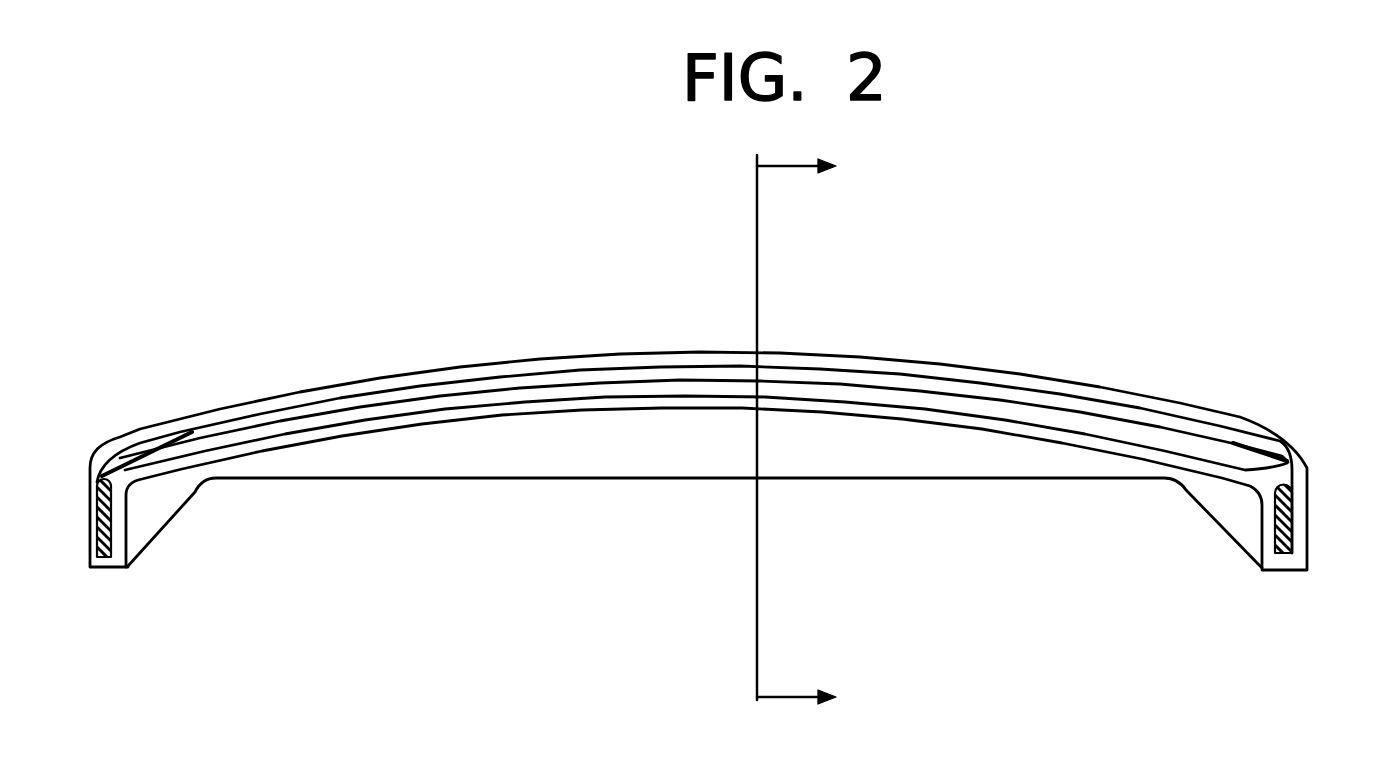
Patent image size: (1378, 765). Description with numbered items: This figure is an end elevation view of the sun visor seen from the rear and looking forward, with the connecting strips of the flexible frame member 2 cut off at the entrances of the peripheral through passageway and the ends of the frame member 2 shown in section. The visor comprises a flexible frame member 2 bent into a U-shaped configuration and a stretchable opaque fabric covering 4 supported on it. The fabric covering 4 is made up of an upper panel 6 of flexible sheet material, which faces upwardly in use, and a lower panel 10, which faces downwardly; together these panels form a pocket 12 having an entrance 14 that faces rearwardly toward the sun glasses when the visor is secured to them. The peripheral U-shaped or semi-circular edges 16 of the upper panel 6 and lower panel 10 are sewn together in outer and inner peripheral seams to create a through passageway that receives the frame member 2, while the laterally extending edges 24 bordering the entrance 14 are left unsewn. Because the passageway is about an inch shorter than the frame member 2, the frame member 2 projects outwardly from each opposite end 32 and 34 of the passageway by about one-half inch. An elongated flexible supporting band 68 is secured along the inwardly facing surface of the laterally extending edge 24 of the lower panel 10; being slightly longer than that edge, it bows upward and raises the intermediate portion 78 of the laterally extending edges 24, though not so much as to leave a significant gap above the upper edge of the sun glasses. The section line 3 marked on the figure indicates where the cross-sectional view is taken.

The flexible frame member 2 is at (100, 532).
The section line 3- 3 is at (792, 431).
The stretchable opaque fabric covering 4 is at (343, 383).
The upper panel 6 is at (850, 352).
The lower panel 10 is at (455, 423).
The pocket 12 is at (935, 389).
The entrance 14 is at (1048, 402).
The peripheral U-shaped or semi-circular edges 16 is at (183, 412).
The laterally extending edges 24 is at (537, 353).
The entrance or end of the passageway 32 is at (96, 568).
The entrance or end of the passageway 34 is at (1290, 553).
The elongated flexible supporting band 68 is at (965, 415).
The intermediate portion 78 is at (690, 350).